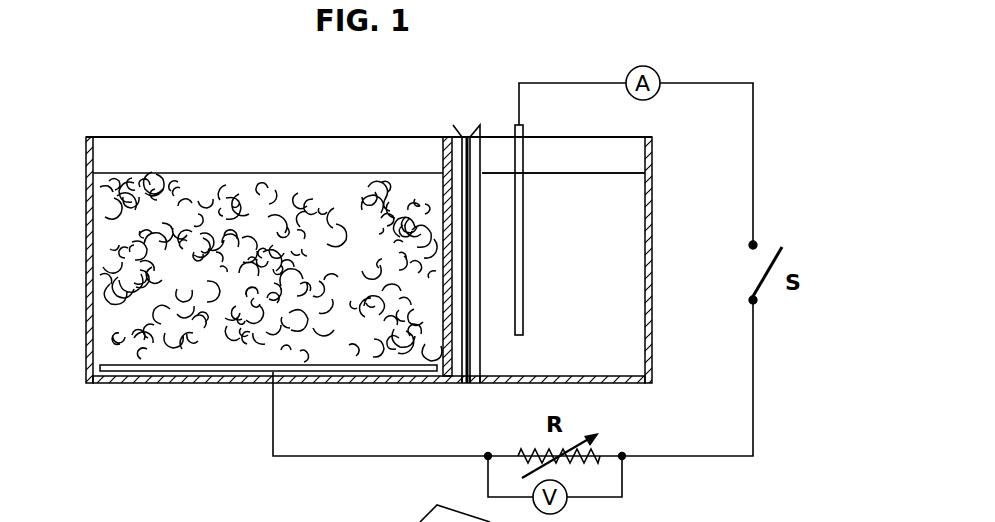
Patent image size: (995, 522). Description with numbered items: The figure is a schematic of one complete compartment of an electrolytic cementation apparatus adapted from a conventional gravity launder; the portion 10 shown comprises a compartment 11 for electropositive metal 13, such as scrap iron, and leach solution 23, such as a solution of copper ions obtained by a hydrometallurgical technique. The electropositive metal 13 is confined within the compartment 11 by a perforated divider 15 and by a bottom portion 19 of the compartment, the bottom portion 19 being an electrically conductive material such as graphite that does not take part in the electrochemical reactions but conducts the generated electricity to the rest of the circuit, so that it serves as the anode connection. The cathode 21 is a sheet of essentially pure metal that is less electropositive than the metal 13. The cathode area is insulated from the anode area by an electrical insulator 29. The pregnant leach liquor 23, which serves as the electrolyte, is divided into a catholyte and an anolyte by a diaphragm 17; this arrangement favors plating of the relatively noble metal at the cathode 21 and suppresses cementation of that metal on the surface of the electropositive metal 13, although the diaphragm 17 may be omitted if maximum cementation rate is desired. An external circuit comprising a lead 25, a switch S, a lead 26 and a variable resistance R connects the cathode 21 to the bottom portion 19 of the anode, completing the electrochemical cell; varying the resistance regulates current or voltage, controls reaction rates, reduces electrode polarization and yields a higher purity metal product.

The portion of the electrolytic cementation apparatus 10 is at (371, 267).
The compartment 11 is at (87, 305).
The electropositive metal 13 is at (204, 185).
The perforated divider 15 is at (443, 135).
The diaphragm 17 is at (468, 130).
The bottom portion 19 is at (203, 367).
The cathode 21 is at (527, 132).
The leach solution 23 is at (615, 308).
The lead 25 is at (755, 205).
The lead 26 is at (755, 387).
The electrical insulator 29 is at (480, 384).